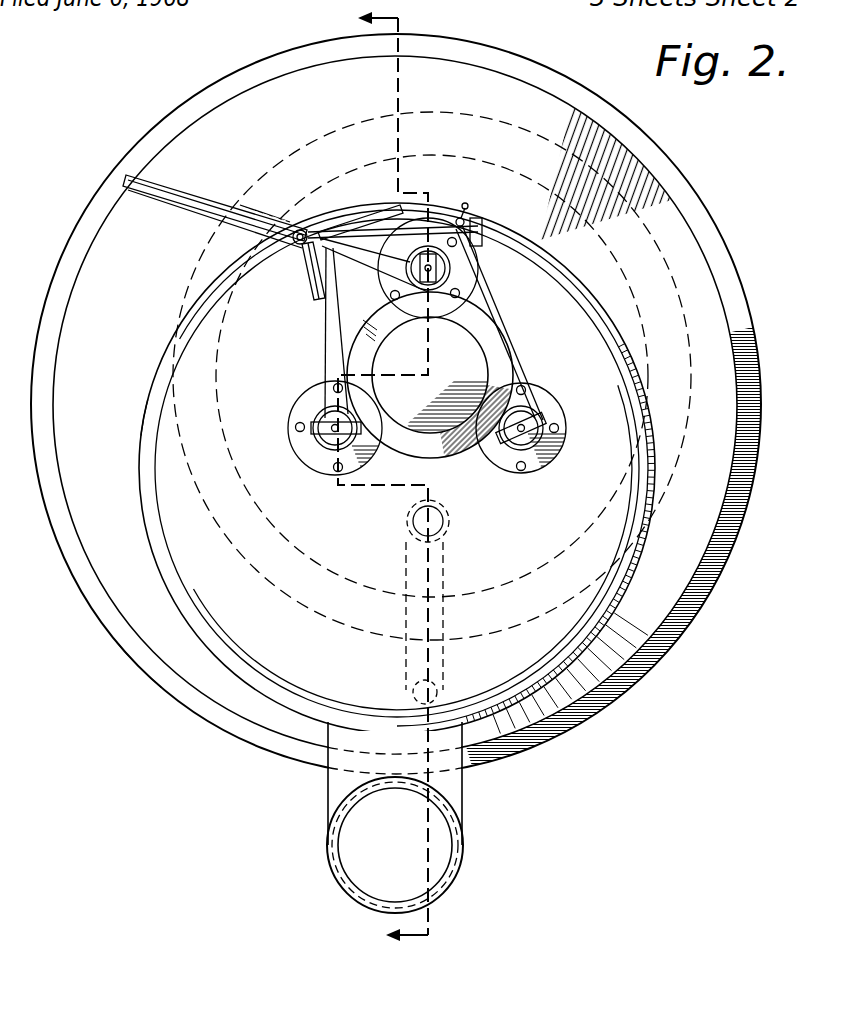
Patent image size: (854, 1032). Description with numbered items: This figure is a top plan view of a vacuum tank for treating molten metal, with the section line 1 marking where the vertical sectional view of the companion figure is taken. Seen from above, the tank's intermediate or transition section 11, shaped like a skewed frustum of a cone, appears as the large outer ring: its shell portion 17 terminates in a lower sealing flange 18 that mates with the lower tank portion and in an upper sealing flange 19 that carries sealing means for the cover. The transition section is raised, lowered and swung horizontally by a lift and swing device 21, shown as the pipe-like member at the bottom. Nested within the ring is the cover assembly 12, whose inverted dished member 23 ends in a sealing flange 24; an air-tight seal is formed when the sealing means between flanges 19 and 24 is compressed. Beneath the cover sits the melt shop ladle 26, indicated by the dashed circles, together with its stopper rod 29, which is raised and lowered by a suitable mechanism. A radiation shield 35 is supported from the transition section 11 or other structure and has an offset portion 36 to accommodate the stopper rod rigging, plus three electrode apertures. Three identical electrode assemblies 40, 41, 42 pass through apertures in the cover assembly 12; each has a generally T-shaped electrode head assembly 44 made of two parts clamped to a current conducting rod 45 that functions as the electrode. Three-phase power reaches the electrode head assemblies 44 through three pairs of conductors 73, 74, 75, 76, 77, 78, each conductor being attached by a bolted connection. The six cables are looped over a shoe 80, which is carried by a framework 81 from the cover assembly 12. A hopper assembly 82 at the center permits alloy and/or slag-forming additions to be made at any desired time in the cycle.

The section line 1 is at (398, 476).
The intermediate or transition section 11 is at (695, 220).
The cover assembly 12 is at (143, 540).
The shell portion 17 is at (694, 268).
The lower sealing flange 18 is at (170, 692).
The upper sealing flange 19 is at (146, 388).
The lift and swing device 21 is at (326, 869).
The inverted dished member 23 is at (172, 476).
The sealing flange 24 is at (153, 437).
The melt shop ladle 26 is at (184, 294).
The stopper rod 29 is at (410, 537).
The radiation shield 35 is at (276, 166).
The offset portion 36 is at (457, 559).
The electrode assembly 40 is at (296, 466).
The electrode assembly 41 is at (413, 308).
The electrode assembly 42 is at (567, 393).
The electrode head assembly 44 is at (416, 248).
The current conducting rod 45 is at (442, 270).
The conductor 73 is at (325, 360).
The conductor 74 is at (340, 334).
The conductor 75 is at (392, 289).
The conductor 76 is at (382, 261).
The conductor 77 is at (476, 302).
The conductor 78 is at (526, 362).
The shoe 80 is at (185, 207).
The framework 81 is at (308, 288).
The hopper assembly 82 is at (452, 462).